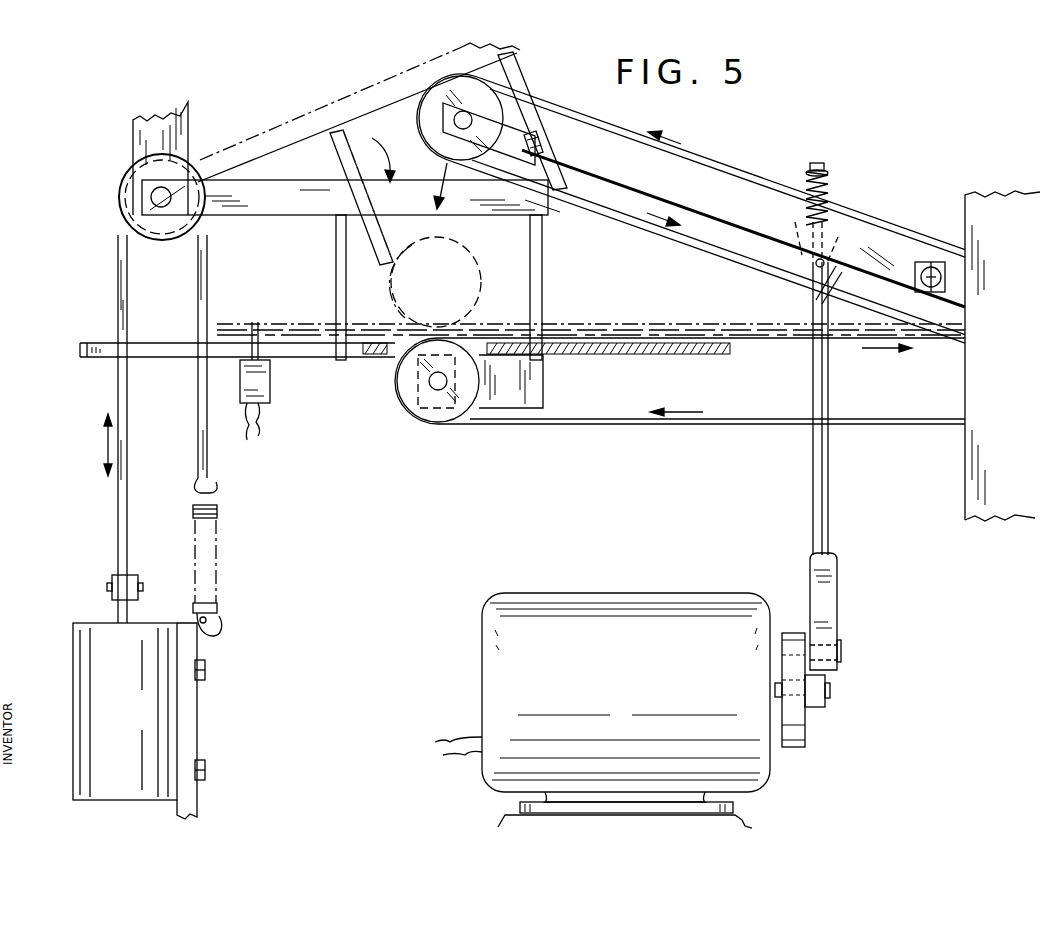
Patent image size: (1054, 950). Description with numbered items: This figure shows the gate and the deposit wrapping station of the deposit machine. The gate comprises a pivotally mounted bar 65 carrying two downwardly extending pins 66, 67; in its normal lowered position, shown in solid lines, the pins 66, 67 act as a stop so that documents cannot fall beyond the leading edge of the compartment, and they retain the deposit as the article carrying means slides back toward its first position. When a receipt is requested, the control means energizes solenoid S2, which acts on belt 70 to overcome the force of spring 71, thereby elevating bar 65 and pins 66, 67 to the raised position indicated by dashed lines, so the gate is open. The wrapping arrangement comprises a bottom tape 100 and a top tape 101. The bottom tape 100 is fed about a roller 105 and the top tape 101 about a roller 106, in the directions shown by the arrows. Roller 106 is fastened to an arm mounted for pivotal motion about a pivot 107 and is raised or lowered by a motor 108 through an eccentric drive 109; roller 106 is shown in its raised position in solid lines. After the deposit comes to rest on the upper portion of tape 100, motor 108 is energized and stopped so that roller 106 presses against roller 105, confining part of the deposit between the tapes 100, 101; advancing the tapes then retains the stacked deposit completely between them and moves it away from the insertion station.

The pivotally mounted bar 65 is at (299, 210).
The pin 66 is at (336, 283).
The pin 67 is at (532, 283).
The belt 70 is at (122, 533).
The spring 71 is at (218, 512).
The bottom tape 100 is at (790, 343).
The top tape 101 is at (747, 260).
The roller 105 is at (408, 390).
The roller 106 is at (508, 104).
The pivot 107 is at (947, 277).
The motor 108 is at (628, 701).
The eccentric drive 109 is at (832, 589).
The solenoid S2 is at (129, 728).